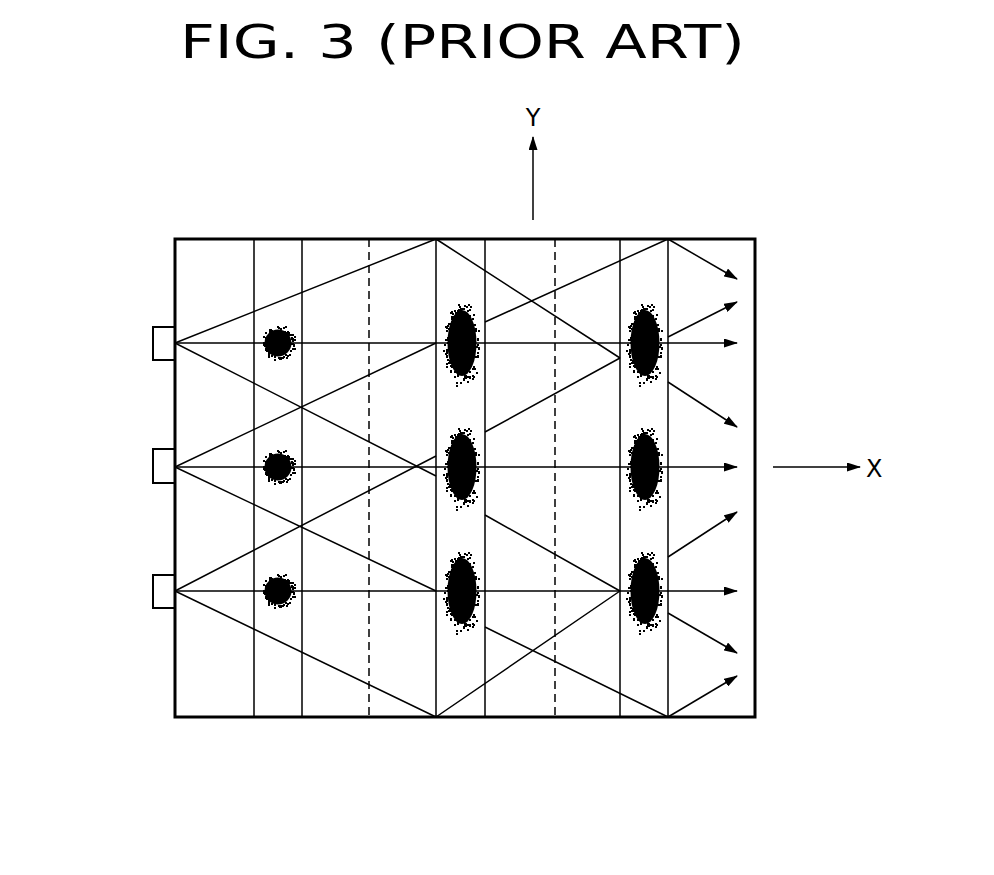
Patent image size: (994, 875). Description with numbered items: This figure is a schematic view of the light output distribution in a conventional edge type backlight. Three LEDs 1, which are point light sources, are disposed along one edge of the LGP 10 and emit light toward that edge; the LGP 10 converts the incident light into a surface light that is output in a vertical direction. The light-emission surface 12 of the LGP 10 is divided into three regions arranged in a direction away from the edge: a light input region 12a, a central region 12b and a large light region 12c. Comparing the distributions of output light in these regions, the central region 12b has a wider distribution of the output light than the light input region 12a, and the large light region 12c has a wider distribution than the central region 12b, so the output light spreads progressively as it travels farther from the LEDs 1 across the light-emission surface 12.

The LEDs 1 is at (162, 575).
The LGP 10 is at (574, 231).
The light-emission surface 12 is at (474, 473).
The light input region 12a is at (175, 719).
The central region 12b is at (369, 719).
The large light region 12c is at (555, 719).